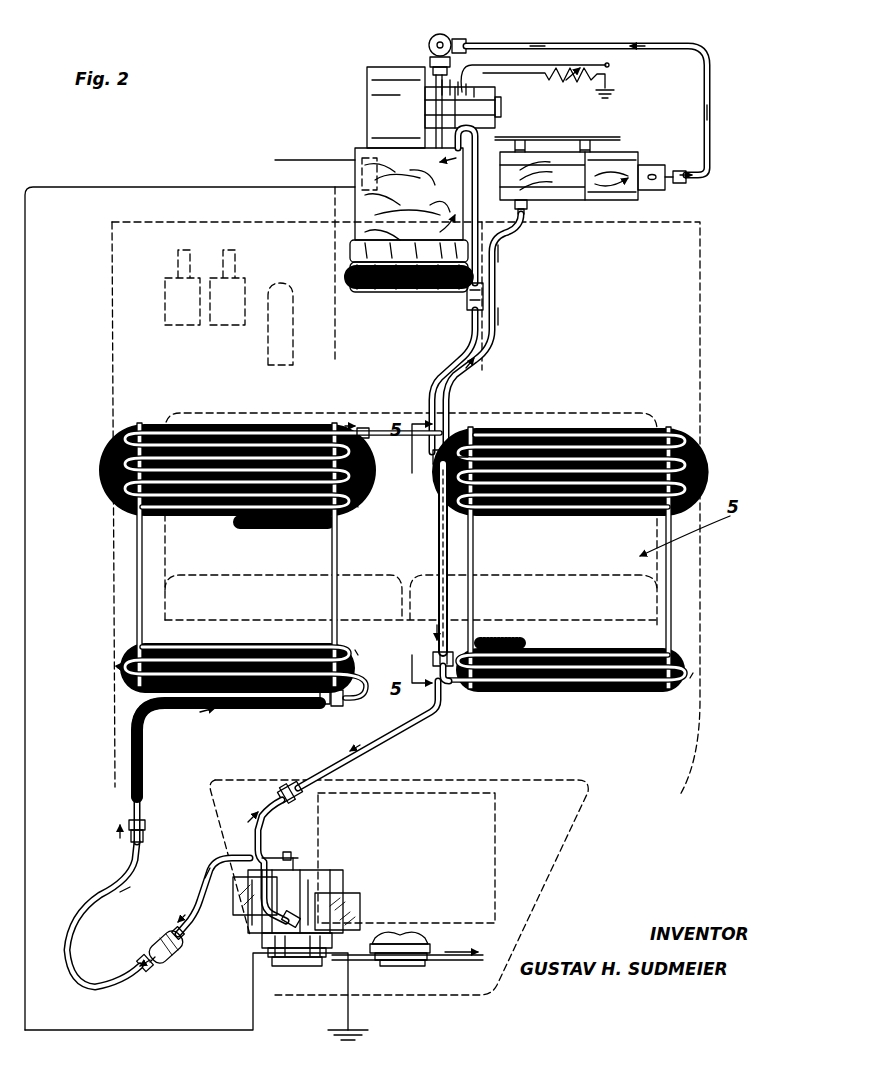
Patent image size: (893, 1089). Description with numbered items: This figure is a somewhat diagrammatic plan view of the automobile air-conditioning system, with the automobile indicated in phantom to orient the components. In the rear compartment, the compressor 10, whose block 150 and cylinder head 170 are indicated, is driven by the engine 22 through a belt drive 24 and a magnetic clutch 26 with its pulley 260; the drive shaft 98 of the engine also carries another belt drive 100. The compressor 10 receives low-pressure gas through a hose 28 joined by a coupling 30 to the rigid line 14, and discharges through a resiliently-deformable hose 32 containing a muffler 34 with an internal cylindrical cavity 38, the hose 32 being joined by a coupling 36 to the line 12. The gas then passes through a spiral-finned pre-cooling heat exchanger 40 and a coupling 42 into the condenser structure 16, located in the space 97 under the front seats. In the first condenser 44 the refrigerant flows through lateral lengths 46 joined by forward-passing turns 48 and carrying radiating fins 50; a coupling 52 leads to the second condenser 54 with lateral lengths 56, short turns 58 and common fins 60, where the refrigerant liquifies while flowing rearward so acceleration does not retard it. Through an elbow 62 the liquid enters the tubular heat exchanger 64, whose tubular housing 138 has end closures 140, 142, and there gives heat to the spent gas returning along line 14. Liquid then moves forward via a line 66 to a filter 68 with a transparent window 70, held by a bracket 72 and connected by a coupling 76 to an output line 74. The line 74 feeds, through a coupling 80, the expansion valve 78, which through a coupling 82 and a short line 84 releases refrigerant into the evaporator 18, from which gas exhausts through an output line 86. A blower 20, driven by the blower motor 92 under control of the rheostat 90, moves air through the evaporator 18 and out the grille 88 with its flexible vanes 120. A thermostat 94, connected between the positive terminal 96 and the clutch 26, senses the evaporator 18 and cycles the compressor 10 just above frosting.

The compressor 10 is at (301, 927).
The line 12 is at (140, 870).
The line 14 is at (372, 747).
The condenser structure 16 is at (521, 426).
The evaporator 18 is at (350, 146).
The blower 20 is at (378, 70).
The engine 22 is at (496, 806).
The belt drive 24 is at (366, 968).
The magnetic clutch 26 is at (262, 957).
The hose 28 is at (262, 835).
The coupling 30 is at (289, 786).
The hose 32 is at (206, 886).
The muffler 34 is at (151, 968).
The coupling 36 is at (130, 840).
The cylindrical cavity 38 is at (181, 952).
The pre-cooling heat exchanger 40 is at (145, 752).
The coupling 42 is at (330, 702).
The first condenser 44 is at (257, 551).
The lateral lengths 46 is at (258, 455).
The forward-passing turns 48 is at (346, 516).
The radiating fins 50 is at (319, 427).
The coupling 52 is at (368, 430).
The condenser 54 is at (591, 535).
The lateral lengths 56 is at (600, 497).
The short turns 58 is at (688, 474).
The common fins 60 is at (593, 435).
The elbow 62 is at (457, 686).
The tubular heat exchanger 64 is at (450, 606).
The line 66 is at (455, 406).
The filter 68 is at (596, 204).
The transparent window 70 is at (652, 165).
The bracket 72 is at (548, 138).
The output line 74 is at (712, 170).
The coupling 76 is at (681, 183).
The expansion valve 78 is at (449, 38).
The coupling 80 is at (470, 44).
The coupling 82 is at (433, 58).
The short line 84 is at (440, 98).
The output line 86 is at (478, 138).
The grille 88 is at (412, 288).
The rheostat 90 is at (588, 82).
The blower motor 92 is at (478, 92).
The thermostat 94 is at (358, 175).
The terminal 96 is at (281, 151).
The space 97 is at (672, 592).
The drive shaft 98 is at (398, 966).
The belt drive 100 is at (446, 951).
The flexible vanes 120 is at (385, 288).
The tubular housing 138 is at (440, 566).
The end closure 140 is at (436, 459).
The end closure 142 is at (432, 661).
The block 150 is at (331, 874).
The cylinder head 170 is at (356, 895).
The pulley 260 is at (290, 975).